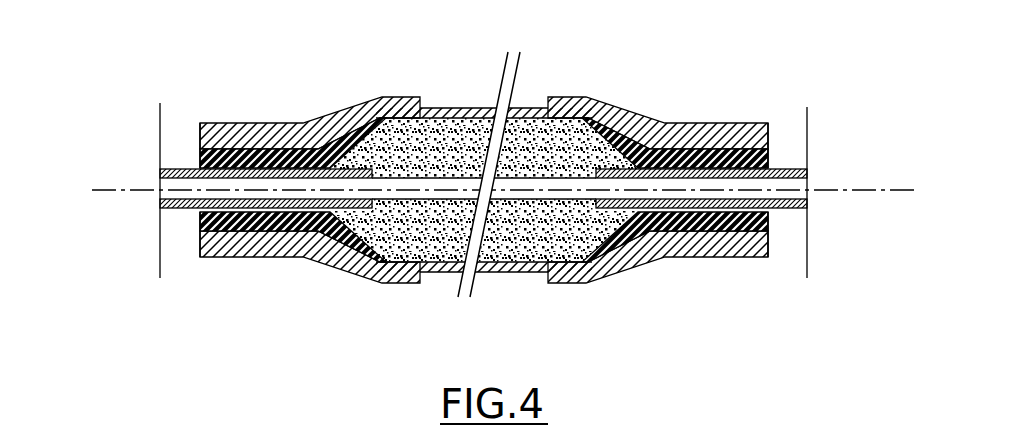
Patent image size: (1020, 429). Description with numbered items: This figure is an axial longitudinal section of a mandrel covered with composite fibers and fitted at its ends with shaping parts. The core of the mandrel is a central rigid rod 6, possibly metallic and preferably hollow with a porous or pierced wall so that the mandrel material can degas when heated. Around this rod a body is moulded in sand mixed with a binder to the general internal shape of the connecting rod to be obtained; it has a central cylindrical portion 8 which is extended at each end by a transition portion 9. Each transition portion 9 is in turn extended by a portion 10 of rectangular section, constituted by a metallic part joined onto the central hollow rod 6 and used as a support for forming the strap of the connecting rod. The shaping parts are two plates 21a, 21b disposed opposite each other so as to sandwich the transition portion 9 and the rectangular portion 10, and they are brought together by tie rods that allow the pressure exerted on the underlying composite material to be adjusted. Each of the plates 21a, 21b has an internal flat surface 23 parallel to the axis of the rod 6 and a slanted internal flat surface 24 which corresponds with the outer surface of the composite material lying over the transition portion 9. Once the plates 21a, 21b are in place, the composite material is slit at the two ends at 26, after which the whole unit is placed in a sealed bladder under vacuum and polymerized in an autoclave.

The central rigid rod 6 is at (186, 197).
The central cylindrical portion 8 is at (522, 113).
The transition portion 9 is at (350, 147).
The portion with rectangular section 10 is at (190, 170).
The plate 21a is at (280, 132).
The plate 21b is at (258, 242).
The internal flat surface 23 is at (717, 227).
The slanted internal flat surface 24 is at (563, 258).
The slit 26 is at (198, 132).